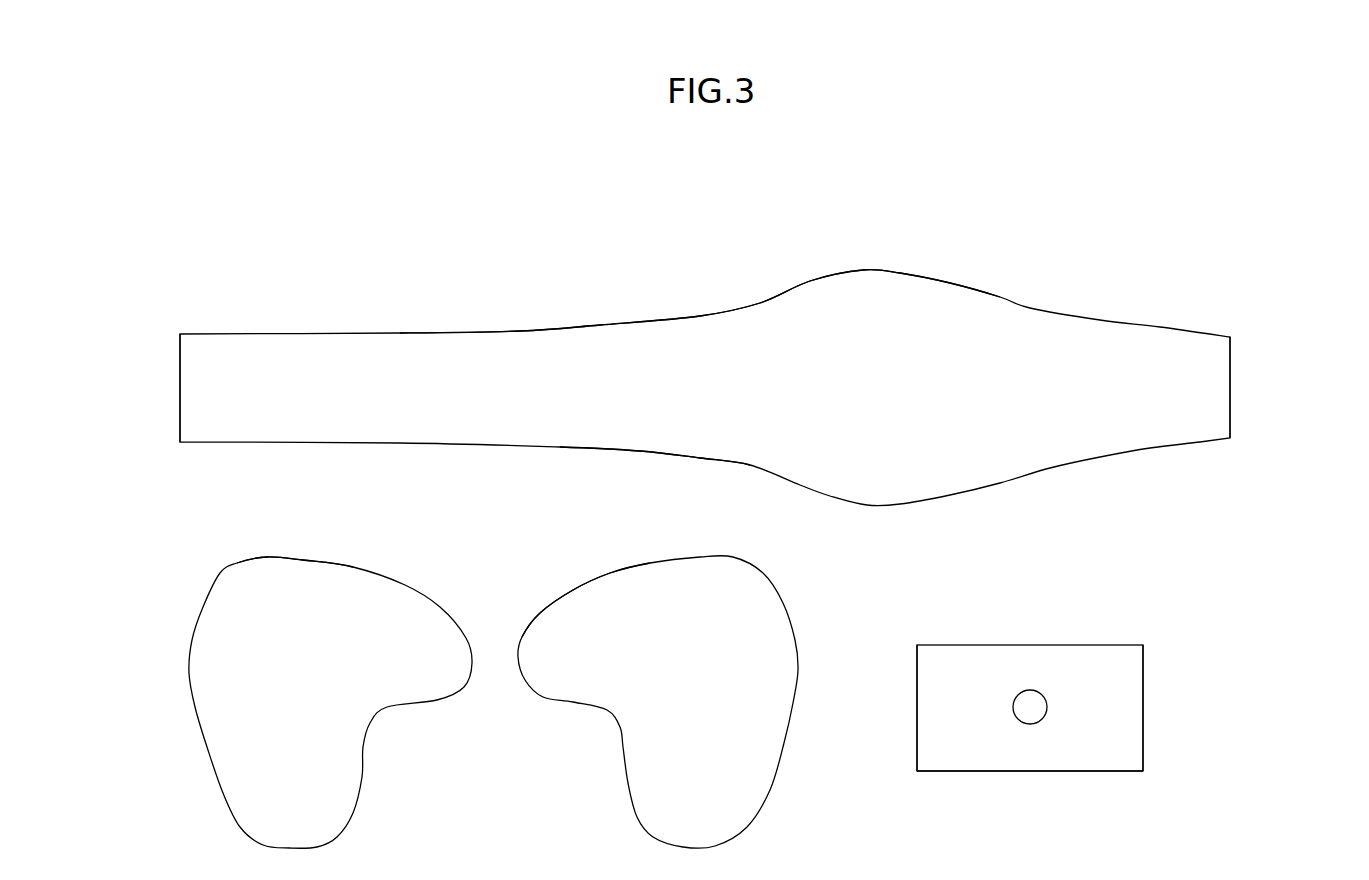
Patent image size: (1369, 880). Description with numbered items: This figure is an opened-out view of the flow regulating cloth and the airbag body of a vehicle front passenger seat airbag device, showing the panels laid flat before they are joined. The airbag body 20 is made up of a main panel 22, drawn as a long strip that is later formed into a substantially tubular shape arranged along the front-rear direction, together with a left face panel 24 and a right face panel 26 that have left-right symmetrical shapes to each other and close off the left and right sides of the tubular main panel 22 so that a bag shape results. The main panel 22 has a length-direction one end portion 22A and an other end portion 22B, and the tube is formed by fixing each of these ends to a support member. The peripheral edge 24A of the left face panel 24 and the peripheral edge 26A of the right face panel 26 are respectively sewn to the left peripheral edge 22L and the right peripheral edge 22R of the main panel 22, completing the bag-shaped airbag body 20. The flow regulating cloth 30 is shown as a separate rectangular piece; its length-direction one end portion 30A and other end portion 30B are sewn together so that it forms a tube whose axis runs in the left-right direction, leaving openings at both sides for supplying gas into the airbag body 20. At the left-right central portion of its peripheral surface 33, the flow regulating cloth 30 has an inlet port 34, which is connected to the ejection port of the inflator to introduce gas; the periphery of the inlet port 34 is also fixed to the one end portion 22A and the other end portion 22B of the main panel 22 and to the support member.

The airbag body 20 is at (345, 312).
The main panel 22 is at (860, 268).
The left peripheral edge 22L is at (595, 324).
The right peripheral edge 22R is at (637, 452).
The one end portion 22A is at (180, 383).
The other end portion 22B is at (1230, 390).
The left face panel 24 is at (219, 572).
The peripheral edge 24A is at (310, 559).
The right face panel 26 is at (772, 574).
The peripheral edge 26A is at (610, 573).
The flow regulating cloth 30 is at (1035, 643).
The one end portion 30A is at (917, 707).
The other end portion 30B is at (1143, 703).
The peripheral surface 33 is at (987, 752).
The inlet port 34 is at (1036, 726).